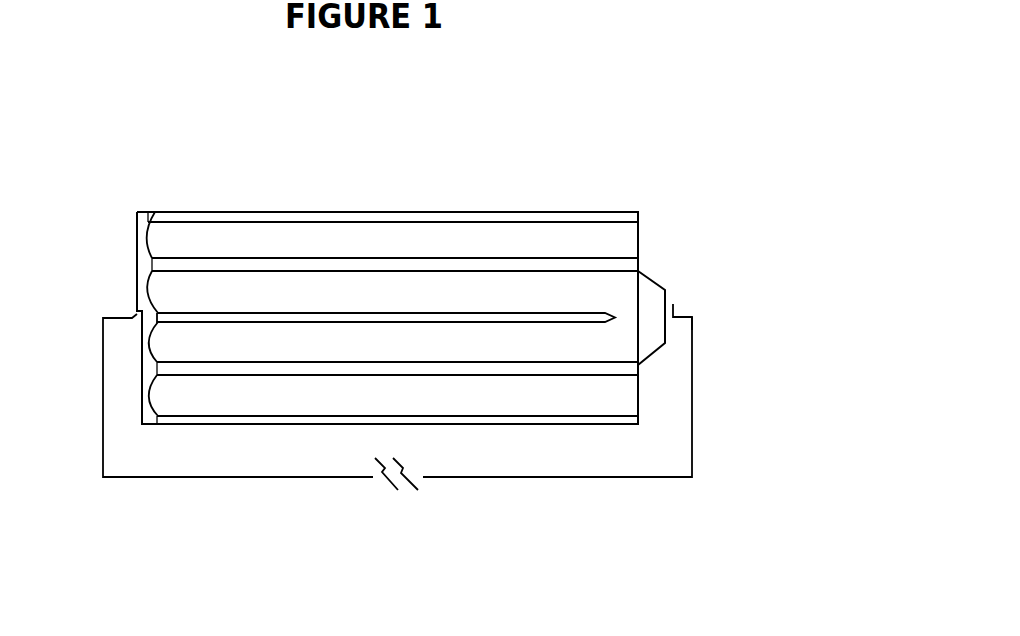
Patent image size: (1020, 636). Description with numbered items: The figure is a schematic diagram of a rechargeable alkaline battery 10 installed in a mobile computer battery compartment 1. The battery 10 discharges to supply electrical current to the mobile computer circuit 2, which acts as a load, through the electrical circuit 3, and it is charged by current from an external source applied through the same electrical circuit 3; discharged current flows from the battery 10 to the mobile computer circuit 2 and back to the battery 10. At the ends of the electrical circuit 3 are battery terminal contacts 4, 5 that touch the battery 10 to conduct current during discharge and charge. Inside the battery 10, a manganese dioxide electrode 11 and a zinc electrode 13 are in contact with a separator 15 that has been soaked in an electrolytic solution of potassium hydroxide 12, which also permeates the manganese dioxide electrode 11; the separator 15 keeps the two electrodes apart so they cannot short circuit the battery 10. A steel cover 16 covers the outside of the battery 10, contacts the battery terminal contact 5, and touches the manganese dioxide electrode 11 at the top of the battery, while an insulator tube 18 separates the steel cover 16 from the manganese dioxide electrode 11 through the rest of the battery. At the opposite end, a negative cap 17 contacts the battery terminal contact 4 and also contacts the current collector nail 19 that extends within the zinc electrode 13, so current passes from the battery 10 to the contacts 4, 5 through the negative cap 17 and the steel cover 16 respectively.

The mobile computer battery compartment 1 is at (696, 209).
The mobile computer circuit 2 is at (407, 492).
The electrical circuit 3 is at (293, 480).
The battery terminal contact 4 is at (132, 314).
The battery terminal contact 5 is at (674, 313).
The rechargeable alkaline battery 10 is at (566, 202).
The manganese dioxide electrode 11 is at (292, 242).
The electrolytic solution of potassium hydroxide 12 is at (482, 265).
The zinc electrode 13 is at (292, 342).
The separator 15 is at (552, 258).
The steel cover 16 is at (303, 445).
The negative cap 17 is at (137, 233).
The insulator tube 18 is at (513, 445).
The current collector nail 19 is at (407, 313).